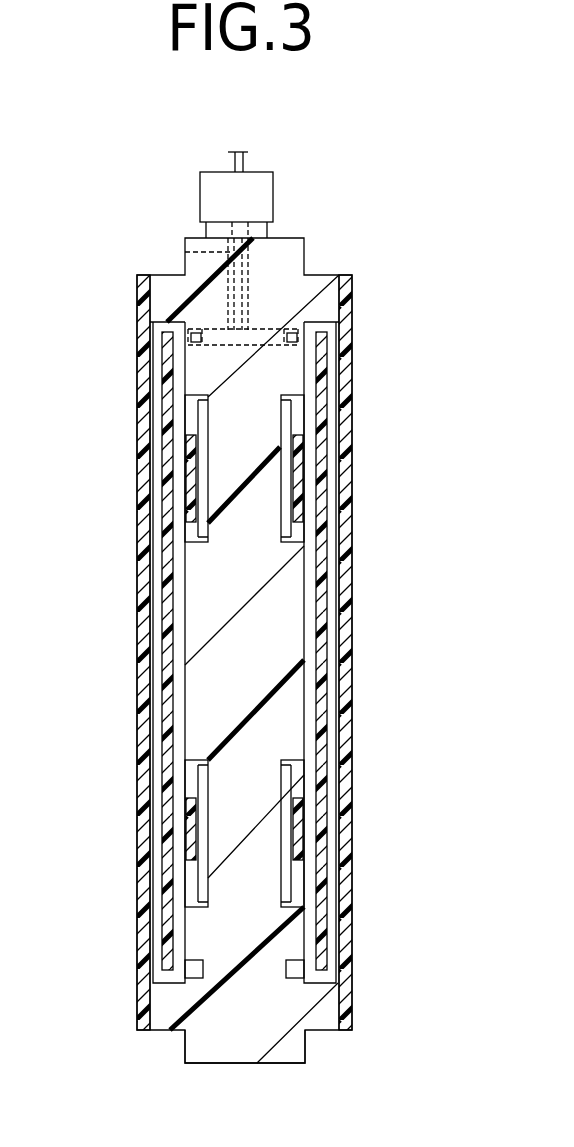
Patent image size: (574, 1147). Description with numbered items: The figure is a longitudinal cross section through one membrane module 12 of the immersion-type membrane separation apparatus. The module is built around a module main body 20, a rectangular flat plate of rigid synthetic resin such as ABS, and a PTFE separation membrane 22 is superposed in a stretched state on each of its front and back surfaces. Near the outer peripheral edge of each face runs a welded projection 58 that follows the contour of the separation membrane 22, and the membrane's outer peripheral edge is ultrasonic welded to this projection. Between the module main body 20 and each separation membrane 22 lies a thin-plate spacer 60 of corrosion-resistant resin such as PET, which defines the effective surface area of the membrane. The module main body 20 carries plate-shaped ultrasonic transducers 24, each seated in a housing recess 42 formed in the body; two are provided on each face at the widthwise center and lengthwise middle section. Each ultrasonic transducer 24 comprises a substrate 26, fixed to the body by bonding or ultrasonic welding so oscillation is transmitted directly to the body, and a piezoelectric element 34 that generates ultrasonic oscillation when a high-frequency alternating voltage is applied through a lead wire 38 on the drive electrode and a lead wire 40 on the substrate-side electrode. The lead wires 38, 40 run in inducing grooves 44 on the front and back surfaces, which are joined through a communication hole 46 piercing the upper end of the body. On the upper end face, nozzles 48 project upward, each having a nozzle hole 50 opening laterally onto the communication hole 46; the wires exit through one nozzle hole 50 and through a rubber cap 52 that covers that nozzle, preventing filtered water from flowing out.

The membrane module 12 is at (338, 268).
The module main body 20 is at (237, 1047).
The separation membrane 22 is at (142, 415).
The ultrasonic transducer 24 is at (194, 418).
The substrate 26 is at (205, 515).
The piezoelectric element 34 is at (192, 477).
The lead wire 38 is at (247, 158).
The lead wire 40 is at (230, 157).
The housing recess 42 is at (177, 533).
The inducing groove 44 is at (170, 975).
The communication hole 46 is at (188, 337).
The nozzle 48 is at (265, 225).
The nozzle hole 50 is at (185, 250).
The rubber cap 52 is at (242, 198).
The welded projection 58 is at (170, 295).
The spacer 60 is at (167, 625).